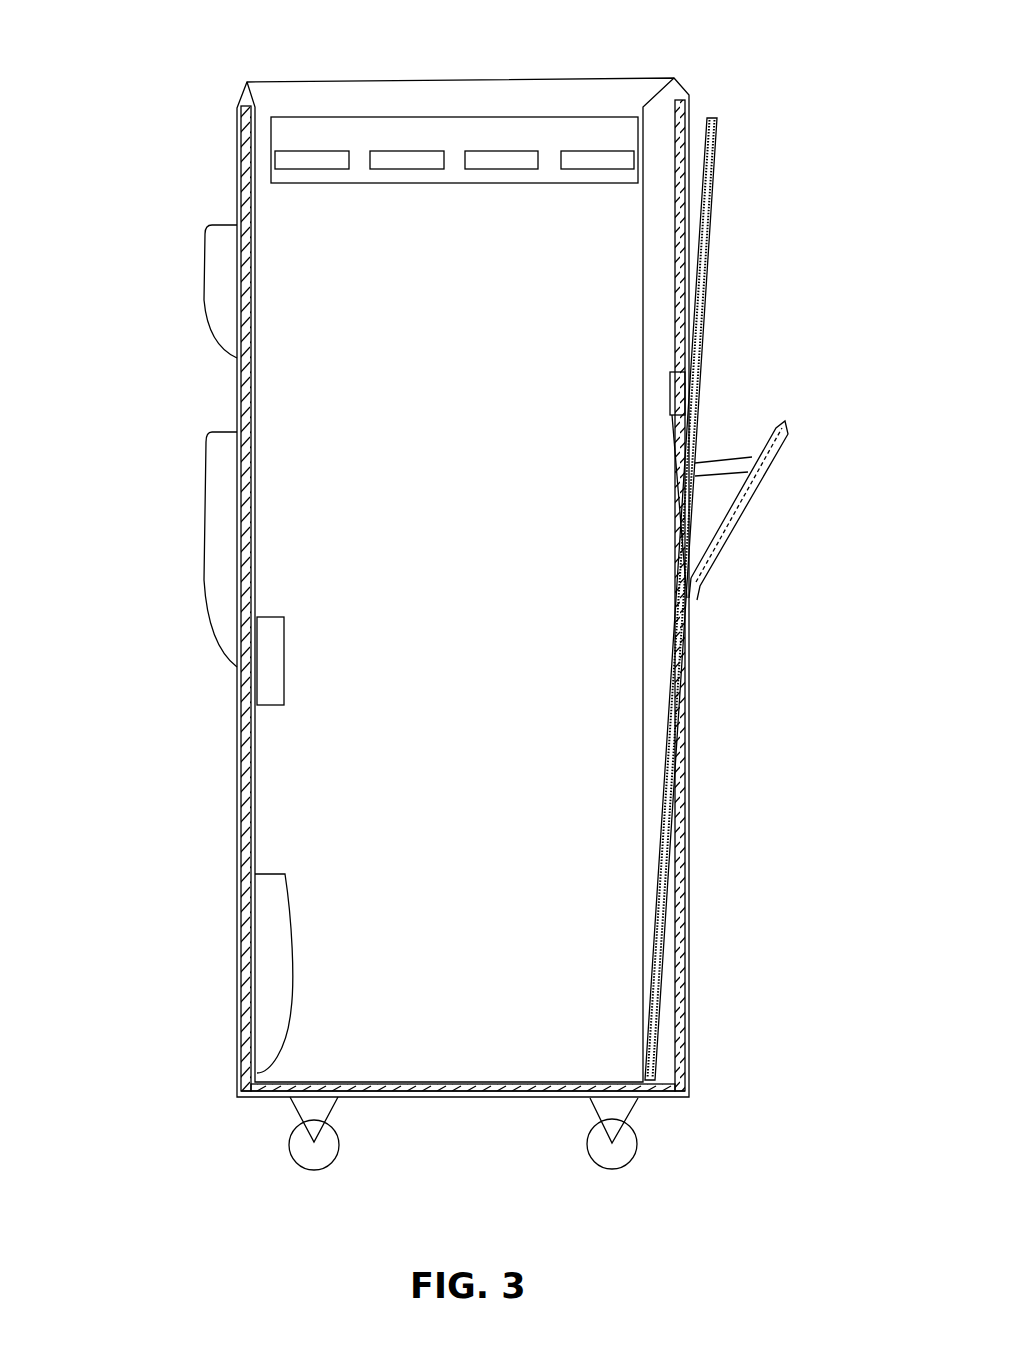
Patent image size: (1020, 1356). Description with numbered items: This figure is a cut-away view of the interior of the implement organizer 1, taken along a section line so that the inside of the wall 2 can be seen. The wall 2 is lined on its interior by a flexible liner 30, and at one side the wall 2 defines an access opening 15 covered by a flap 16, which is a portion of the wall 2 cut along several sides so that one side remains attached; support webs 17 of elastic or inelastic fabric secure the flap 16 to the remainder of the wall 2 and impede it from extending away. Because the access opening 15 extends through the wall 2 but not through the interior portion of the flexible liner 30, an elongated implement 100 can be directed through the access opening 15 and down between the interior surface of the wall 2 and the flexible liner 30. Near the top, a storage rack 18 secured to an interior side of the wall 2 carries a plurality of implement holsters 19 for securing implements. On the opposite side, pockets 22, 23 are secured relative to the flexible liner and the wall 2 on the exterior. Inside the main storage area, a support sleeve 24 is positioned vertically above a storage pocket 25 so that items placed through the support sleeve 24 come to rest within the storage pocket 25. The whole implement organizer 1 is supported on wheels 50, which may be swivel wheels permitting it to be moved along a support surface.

The implement organizer 1 is at (135, 110).
The wall 2 is at (247, 1029).
The access opening 15 is at (774, 479).
The flap 16 is at (735, 502).
The support webs 17 is at (733, 467).
The storage rack 18 is at (370, 128).
The implement holsters 19 is at (507, 155).
The pocket 22 is at (210, 302).
The pocket 23 is at (214, 610).
The support sleeve 24 is at (276, 667).
The storage pocket 25 is at (283, 962).
The flexible liner 30 is at (257, 355).
The wheels 50 is at (305, 1157).
The elongated implement 100 is at (713, 173).